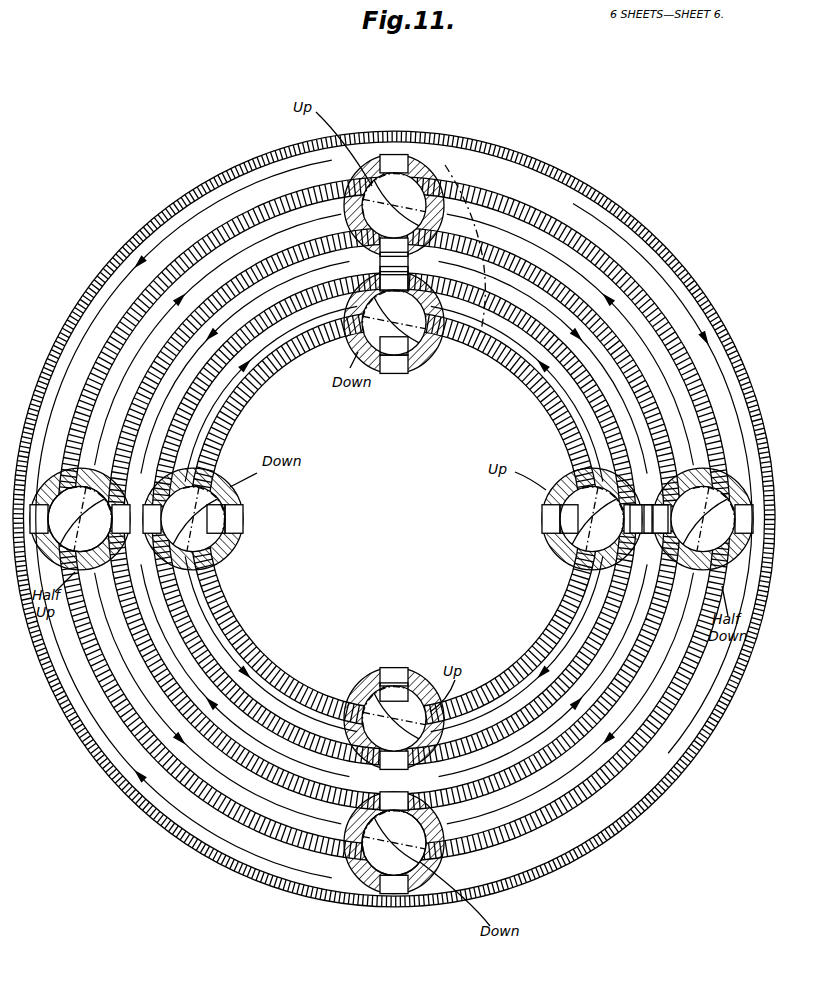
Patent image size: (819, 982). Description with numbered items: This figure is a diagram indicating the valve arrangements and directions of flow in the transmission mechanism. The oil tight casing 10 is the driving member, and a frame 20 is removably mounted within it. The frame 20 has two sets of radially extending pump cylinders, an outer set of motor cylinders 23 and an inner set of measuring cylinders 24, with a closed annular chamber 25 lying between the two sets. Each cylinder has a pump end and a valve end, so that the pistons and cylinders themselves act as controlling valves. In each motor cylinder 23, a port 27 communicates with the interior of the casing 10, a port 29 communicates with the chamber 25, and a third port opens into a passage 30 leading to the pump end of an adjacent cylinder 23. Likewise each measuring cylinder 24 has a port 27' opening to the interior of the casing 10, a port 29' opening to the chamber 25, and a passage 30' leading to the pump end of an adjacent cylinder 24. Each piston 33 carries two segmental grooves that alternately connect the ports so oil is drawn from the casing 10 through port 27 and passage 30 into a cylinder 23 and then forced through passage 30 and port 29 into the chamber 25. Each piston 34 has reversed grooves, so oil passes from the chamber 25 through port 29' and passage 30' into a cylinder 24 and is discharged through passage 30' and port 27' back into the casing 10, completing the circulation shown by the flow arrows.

The oil tight casing 10 is at (583, 182).
The frame 20 is at (612, 258).
The motor cylinders 23 is at (356, 192).
The measuring cylinders 24 is at (240, 550).
The closed annular chamber 25 is at (553, 364).
The port 27 is at (229, 712).
The port 27' is at (392, 521).
The port 29 is at (505, 392).
The port 29' is at (524, 423).
The passage 30 is at (394, 519).
The passage 30' is at (394, 518).
The piston 33 is at (322, 202).
The piston 34 is at (240, 502).